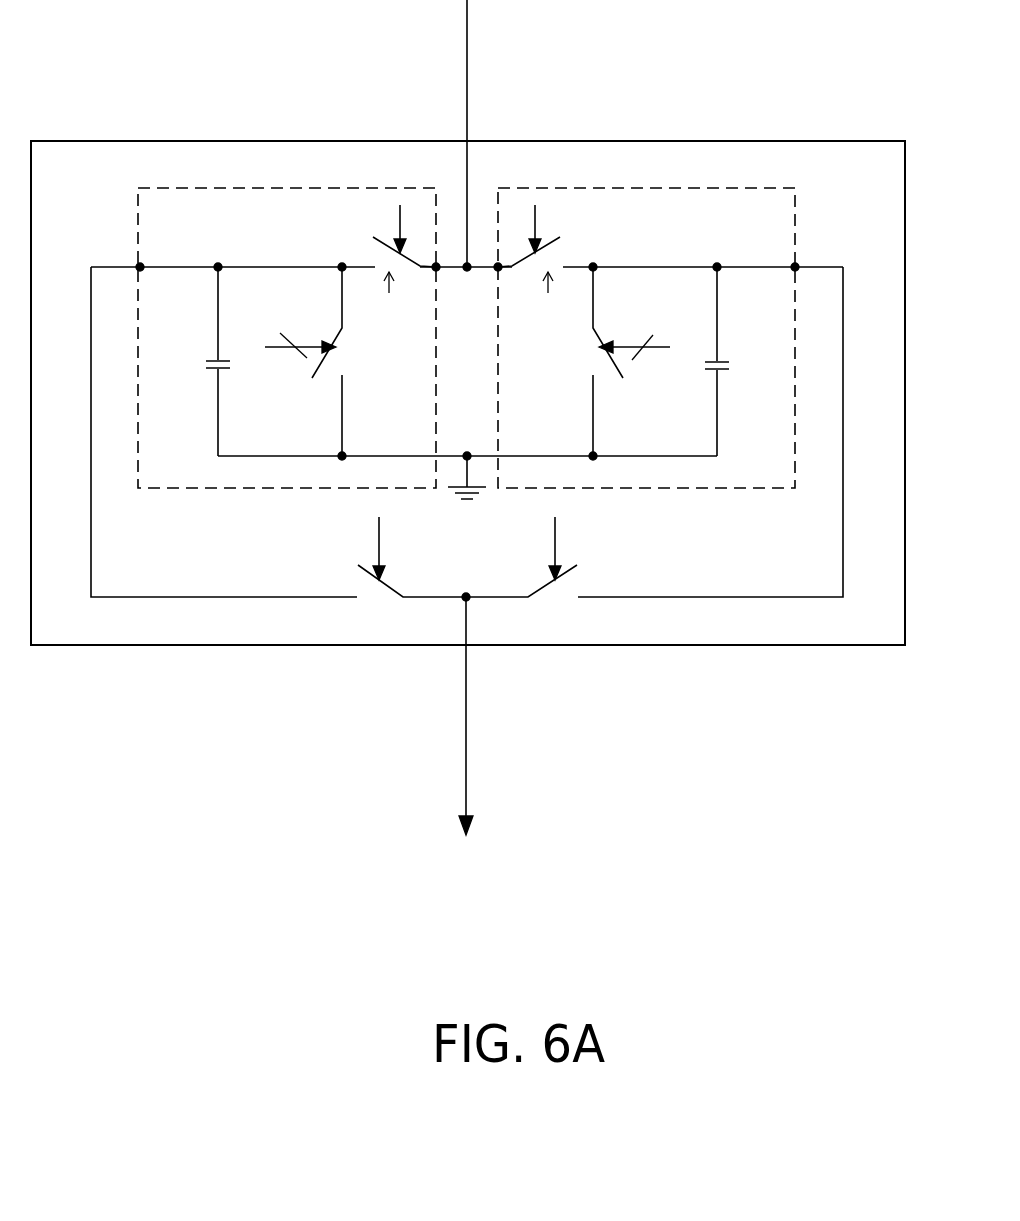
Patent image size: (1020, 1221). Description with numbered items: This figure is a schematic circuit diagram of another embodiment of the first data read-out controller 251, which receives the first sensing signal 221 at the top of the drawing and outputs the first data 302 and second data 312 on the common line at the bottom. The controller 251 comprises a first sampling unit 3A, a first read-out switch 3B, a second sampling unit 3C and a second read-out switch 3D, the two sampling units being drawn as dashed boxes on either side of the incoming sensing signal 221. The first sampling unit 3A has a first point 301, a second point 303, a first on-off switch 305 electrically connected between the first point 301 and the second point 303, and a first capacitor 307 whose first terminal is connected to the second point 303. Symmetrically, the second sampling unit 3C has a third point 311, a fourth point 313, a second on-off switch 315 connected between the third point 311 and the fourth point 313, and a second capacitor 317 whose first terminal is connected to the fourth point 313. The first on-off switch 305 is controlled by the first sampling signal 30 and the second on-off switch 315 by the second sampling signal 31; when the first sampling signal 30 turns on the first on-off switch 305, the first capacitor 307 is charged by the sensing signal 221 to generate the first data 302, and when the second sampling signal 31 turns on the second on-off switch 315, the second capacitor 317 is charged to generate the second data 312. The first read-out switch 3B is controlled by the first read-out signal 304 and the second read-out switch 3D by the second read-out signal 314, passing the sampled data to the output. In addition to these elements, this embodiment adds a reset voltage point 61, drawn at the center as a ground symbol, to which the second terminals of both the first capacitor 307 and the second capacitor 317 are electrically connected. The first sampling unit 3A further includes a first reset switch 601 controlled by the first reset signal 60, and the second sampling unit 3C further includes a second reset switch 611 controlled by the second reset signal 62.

The first sensing signal 221 is at (452, 65).
The first data read-out controller 251 is at (593, 141).
The second point 303 is at (138, 266).
The fourth point 313 is at (797, 266).
The first sampling signal 30 is at (411, 204).
The second sampling signal 31 is at (524, 204).
The first on-off switch 305 is at (402, 299).
The second on-off switch 315 is at (562, 299).
The first point 301 is at (436, 268).
The third point 311 is at (499, 268).
The first capacitor 307 is at (196, 362).
The second capacitor 317 is at (744, 364).
The first reset signal 60 is at (266, 347).
The second reset signal 62 is at (668, 347).
The first reset switch 601 is at (349, 361).
The second reset switch 611 is at (586, 361).
The reset voltage point 61 is at (467, 456).
The first sampling unit 3A is at (368, 488).
The second sampling unit 3C is at (578, 488).
The first read-out switch 3B is at (381, 599).
The second read-out switch 3D is at (554, 599).
The first read-out signal 304 is at (390, 528).
The second read-out signal 314 is at (567, 552).
The first data 302 is at (78, 460).
The second data 312 is at (855, 462).